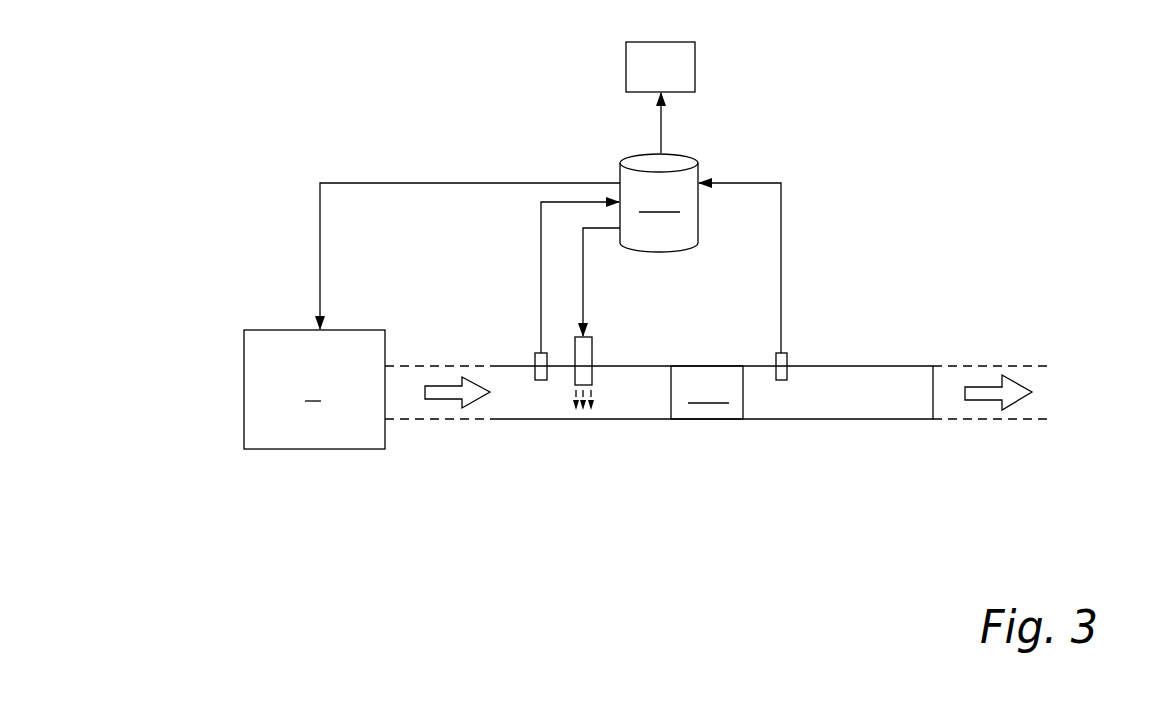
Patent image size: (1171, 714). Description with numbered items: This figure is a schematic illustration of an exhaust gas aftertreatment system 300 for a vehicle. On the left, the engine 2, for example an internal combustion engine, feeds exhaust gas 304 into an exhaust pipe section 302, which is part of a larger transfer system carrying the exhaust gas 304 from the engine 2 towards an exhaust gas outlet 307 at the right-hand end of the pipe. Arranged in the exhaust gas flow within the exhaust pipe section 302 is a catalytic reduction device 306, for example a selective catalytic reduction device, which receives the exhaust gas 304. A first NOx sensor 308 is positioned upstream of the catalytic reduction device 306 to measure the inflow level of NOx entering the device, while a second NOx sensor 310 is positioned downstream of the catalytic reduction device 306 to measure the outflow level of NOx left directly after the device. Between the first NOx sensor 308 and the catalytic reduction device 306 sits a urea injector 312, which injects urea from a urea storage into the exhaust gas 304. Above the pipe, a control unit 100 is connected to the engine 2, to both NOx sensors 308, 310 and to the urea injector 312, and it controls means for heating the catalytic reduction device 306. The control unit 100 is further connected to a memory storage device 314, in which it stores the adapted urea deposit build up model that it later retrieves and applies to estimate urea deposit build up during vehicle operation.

The engine 2 is at (314, 389).
The control unit 100 is at (659, 203).
The exhaust gas aftertreatment system 300 is at (504, 283).
The exhaust pipe section 302 is at (562, 421).
The exhaust gas 304 is at (436, 401).
The catalytic reduction device 306 is at (707, 392).
The exhaust gas outlet 307 is at (1055, 381).
The first NOx sensor 308 is at (535, 358).
The second NOx sensor 310 is at (788, 358).
The urea injector 312 is at (592, 348).
The memory storage device 314 is at (695, 70).